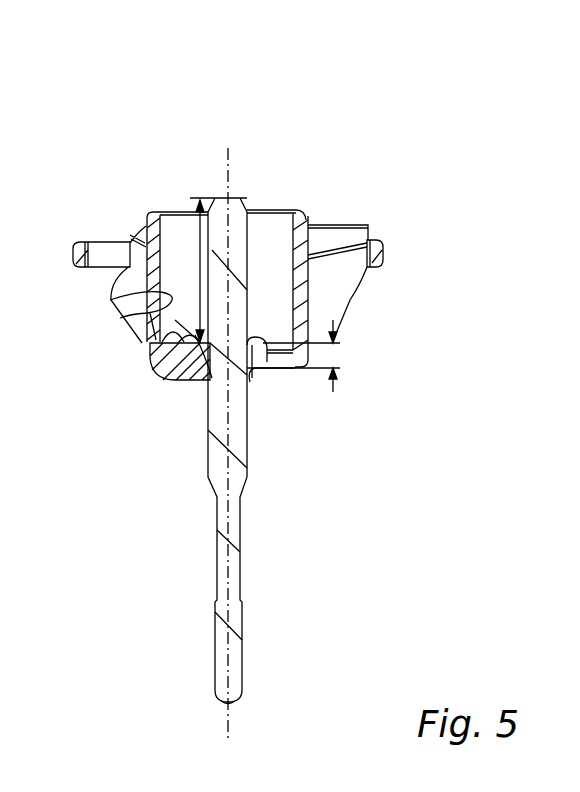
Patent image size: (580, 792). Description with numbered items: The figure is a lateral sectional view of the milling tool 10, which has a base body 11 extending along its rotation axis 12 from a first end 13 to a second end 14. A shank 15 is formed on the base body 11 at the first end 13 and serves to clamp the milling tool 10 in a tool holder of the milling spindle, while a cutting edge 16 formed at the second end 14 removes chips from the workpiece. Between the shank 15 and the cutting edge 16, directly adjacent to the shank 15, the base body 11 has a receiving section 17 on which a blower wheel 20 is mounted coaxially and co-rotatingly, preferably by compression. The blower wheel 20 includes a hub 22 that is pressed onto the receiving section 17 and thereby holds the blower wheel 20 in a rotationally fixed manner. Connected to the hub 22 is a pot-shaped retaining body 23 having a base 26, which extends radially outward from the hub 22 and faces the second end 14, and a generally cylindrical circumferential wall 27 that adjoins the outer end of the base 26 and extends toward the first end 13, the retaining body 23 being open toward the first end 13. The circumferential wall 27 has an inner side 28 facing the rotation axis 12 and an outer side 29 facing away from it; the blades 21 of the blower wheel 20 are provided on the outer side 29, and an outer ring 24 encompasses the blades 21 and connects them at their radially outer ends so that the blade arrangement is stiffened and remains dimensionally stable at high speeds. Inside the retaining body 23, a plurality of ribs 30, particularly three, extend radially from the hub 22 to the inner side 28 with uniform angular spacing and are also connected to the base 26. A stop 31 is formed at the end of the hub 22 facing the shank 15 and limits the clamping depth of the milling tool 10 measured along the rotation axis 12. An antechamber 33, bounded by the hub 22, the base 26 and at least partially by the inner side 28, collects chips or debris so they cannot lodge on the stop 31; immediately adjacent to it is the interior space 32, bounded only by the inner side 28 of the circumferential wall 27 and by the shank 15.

The milling tool 10 is at (108, 125).
The base body 11 is at (245, 530).
The rotation axis 12 is at (227, 158).
The first end 13 is at (233, 195).
The second end 14 is at (228, 700).
The shank 15 is at (248, 242).
The cutting edge 16 is at (230, 701).
The receiving section 17 is at (178, 381).
The blower wheel 20 is at (146, 362).
The blades 21 is at (360, 274).
The hub 22 is at (252, 384).
The retaining body 23 is at (300, 377).
The outer ring 24 is at (387, 253).
The base 26 is at (277, 385).
The circumferential wall 27 is at (308, 283).
The inner side 28 is at (110, 299).
The outer side 29 is at (120, 318).
The ribs 30 is at (163, 372).
The stop 31 is at (212, 381).
The interior space 32 is at (167, 222).
The antechamber 33 is at (285, 337).